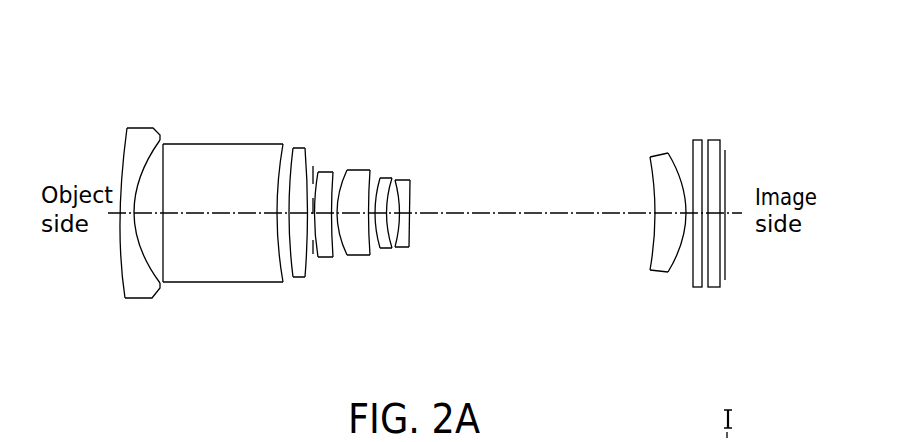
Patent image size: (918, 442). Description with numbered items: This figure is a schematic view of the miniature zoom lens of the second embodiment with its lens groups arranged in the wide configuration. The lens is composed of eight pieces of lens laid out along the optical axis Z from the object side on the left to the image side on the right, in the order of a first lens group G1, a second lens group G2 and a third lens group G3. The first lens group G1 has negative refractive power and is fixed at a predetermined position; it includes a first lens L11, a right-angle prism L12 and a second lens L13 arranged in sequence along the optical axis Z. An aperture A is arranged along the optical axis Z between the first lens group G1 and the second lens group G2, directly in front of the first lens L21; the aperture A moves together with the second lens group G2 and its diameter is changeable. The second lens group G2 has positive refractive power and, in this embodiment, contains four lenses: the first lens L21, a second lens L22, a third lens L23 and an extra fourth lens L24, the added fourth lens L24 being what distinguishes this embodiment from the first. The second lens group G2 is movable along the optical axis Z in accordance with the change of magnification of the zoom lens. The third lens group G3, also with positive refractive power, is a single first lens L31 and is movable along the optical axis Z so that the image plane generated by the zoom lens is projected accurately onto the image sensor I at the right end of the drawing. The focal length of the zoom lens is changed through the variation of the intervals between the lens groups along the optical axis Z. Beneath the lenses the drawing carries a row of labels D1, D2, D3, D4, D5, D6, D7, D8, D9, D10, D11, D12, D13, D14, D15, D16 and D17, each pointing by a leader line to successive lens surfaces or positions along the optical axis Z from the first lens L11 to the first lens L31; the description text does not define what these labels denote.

The first lens group G1 is at (287, 57).
The second lens group G2 is at (432, 57).
The third lens group G3 is at (673, 83).
The first lens L11 is at (141, 140).
The right-angle prism L12 is at (240, 158).
The second lens L13 is at (293, 146).
The first lens L21 is at (321, 170).
The second lens L22 is at (356, 168).
The third lens L23 is at (386, 176).
The fourth lens L24 is at (401, 178).
The first lens L31 is at (661, 152).
The aperture A is at (313, 150).
The image sensor I is at (727, 142).
The optical axis Z is at (742, 201).
The object-side surface of lens L11 D1 is at (126, 217).
The image-side surface of lens L11 D2 is at (149, 215).
The object-side surface of lens L12 D3 is at (219, 216).
The image-side surface of lens L12 D4 is at (277, 215).
The object-side surface of lens L13 D5 is at (291, 216).
The image-side surface of lens L13 D6 is at (305, 278).
The object-side surface of lens L21 D7 is at (318, 258).
The image-side surface of lens L21 D8 is at (333, 258).
The object-side surface of lens L22 D9 is at (347, 256).
The image-side surface of lens L22 D10 is at (370, 256).
The object-side surface of lens L23 D11 is at (380, 249).
The image-side surface of lens L23 D12 is at (392, 249).
The object-side surface of lens L24 D13 is at (395, 248).
The image-side surface of lens L24 D14 is at (410, 248).
The air gap between second and third lens groups D15 is at (540, 215).
The object-side surface of lens L31 D16 is at (658, 240).
The image-side surface of lens L31 D17 is at (690, 240).